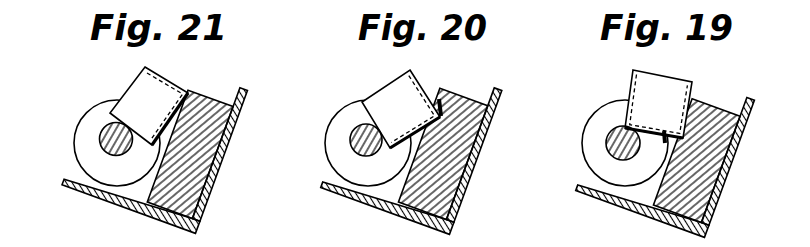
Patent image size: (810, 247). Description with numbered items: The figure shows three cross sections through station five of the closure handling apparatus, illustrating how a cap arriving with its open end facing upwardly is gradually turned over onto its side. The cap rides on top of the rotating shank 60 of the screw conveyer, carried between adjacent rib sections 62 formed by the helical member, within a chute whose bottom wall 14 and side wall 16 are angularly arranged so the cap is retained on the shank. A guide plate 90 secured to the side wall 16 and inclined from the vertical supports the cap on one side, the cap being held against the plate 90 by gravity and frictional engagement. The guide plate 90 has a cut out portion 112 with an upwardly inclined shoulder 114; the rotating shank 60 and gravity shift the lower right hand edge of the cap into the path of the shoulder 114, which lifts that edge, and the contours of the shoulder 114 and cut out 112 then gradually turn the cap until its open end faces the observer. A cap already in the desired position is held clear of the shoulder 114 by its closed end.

In FIG. 21, the bottom wall 14 is at (137, 205).
In FIG. 20, the bottom wall 14 is at (377, 203).
In FIG. 19, the bottom wall 14 is at (630, 208).
In FIG. 21, the side wall 16 is at (213, 182).
In FIG. 20, the side wall 16 is at (462, 187).
In FIG. 19, the side wall 16 is at (733, 170).
In FIG. 21, the shank 60 is at (100, 148).
In FIG. 20, the shank 60 is at (352, 142).
In FIG. 19, the shank 60 is at (607, 143).
In FIG. 21, the rib sections 62 is at (100, 133).
In FIG. 20, the rib sections 62 is at (364, 116).
In FIG. 19, the rib sections 62 is at (614, 121).
In FIG. 21, the guide plate 90 is at (218, 100).
In FIG. 20, the guide plate 90 is at (470, 100).
In FIG. 19, the guide plate 90 is at (712, 100).
In FIG. 19, the cut out portion 112 is at (688, 123).
In FIG. 20, the shoulder 114 is at (443, 116).
In FIG. 19, the shoulder 114 is at (666, 143).